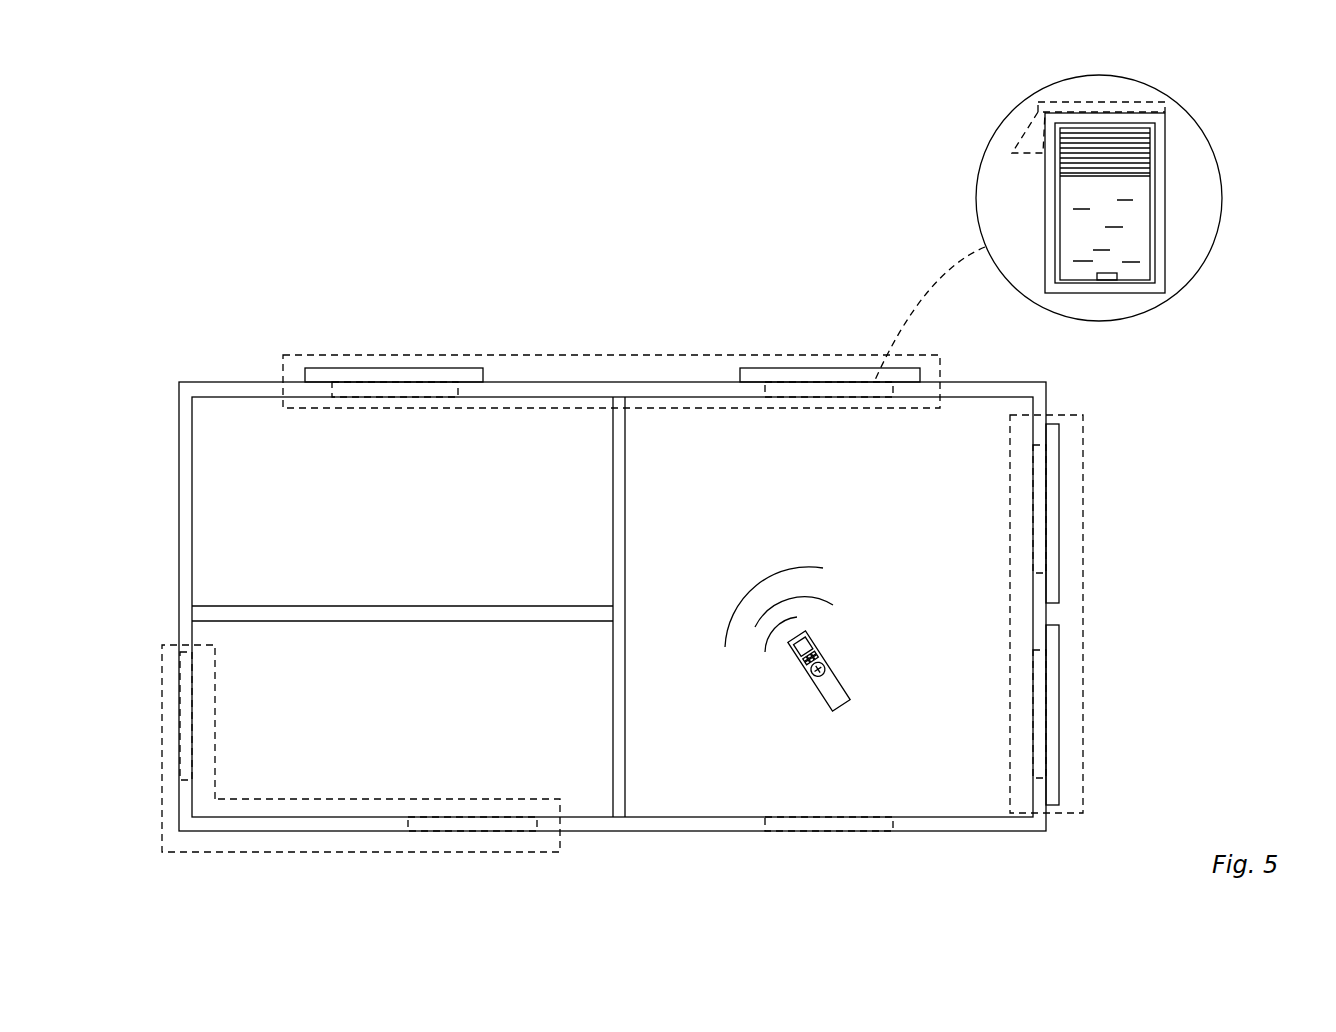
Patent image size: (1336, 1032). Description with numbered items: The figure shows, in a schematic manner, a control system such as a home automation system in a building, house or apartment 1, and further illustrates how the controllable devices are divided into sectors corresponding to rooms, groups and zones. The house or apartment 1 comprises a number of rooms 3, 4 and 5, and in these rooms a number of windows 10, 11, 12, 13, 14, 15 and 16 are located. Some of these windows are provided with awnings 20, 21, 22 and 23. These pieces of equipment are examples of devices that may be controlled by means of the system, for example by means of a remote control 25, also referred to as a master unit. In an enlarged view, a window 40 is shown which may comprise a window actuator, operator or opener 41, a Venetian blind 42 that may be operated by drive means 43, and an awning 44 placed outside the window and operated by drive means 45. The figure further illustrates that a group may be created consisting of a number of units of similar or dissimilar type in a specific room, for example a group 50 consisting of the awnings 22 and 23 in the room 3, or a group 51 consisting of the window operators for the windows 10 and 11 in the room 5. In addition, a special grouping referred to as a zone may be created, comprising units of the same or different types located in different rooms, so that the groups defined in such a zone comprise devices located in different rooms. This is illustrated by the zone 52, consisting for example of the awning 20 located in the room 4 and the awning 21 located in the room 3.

The building 1 is at (245, 286).
The room 3 is at (942, 622).
The room 4 is at (527, 518).
The room 5 is at (531, 698).
The window 10 is at (477, 815).
The window 11 is at (192, 708).
The window 12 is at (383, 397).
The window 13 is at (807, 397).
The window 14 is at (1033, 515).
The window 15 is at (1033, 700).
The window 16 is at (828, 815).
The awning 20 is at (430, 365).
The awning 21 is at (797, 367).
The awning 22 is at (1059, 518).
The awning 23 is at (1059, 717).
The remote control 25 is at (803, 675).
The window 40 is at (1042, 243).
The window actuator 41 is at (1107, 273).
The Venetian blind 42 is at (1138, 170).
The drive means 43 is at (1150, 130).
The awning 44 is at (1020, 130).
The drive means 45 is at (1057, 100).
The group 50 is at (1083, 612).
The group 51 is at (160, 706).
The zone 52 is at (597, 353).